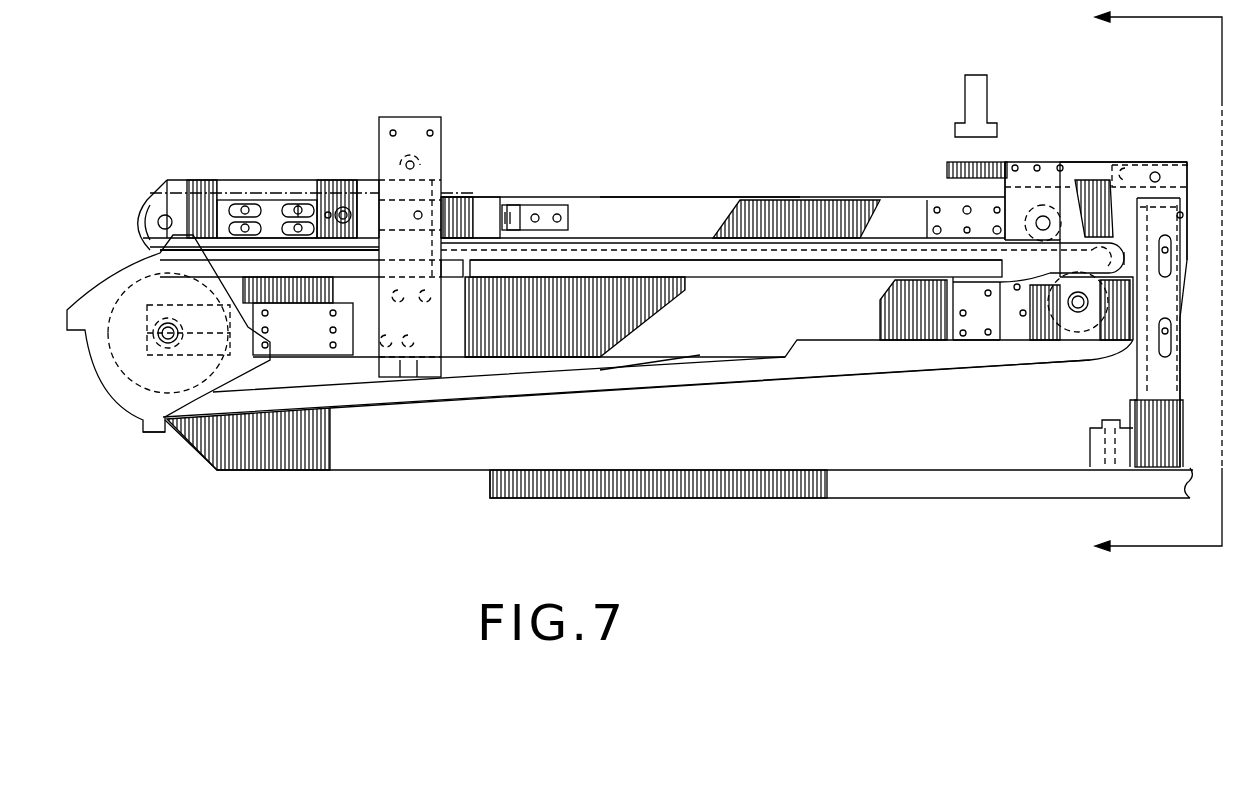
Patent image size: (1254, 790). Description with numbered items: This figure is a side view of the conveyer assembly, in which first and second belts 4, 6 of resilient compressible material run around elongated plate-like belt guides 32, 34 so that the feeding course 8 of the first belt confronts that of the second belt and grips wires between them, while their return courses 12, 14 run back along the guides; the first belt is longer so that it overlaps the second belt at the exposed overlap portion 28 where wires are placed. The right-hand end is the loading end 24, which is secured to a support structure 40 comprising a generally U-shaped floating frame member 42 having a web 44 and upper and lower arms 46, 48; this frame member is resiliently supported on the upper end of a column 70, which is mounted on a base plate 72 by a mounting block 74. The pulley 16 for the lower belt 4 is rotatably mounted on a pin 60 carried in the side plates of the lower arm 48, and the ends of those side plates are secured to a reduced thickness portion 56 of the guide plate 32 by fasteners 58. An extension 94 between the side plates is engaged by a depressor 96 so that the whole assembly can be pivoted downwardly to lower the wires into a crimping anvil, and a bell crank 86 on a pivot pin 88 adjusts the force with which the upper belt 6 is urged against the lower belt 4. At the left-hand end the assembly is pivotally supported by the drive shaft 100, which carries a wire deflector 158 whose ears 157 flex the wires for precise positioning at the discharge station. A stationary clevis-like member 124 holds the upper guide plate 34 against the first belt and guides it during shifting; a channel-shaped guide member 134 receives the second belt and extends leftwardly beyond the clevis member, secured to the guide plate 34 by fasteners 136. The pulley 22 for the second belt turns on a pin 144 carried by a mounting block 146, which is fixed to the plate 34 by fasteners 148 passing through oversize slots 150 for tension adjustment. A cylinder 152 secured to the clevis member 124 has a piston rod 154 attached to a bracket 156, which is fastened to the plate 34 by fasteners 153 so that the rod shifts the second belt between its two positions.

The first belt 4 is at (738, 388).
The second belt 6 is at (765, 190).
The feeding course 8 is at (1145, 281).
The return course 12 is at (838, 374).
The return course 14 is at (712, 195).
The pulley 16 is at (1113, 323).
The pulley 22 is at (143, 222).
The loading end 24 is at (1133, 259).
The overlap portion 28 is at (1063, 240).
The first belt guide 32 is at (738, 322).
The second belt guide 34 is at (670, 230).
The support structure 40 is at (1068, 138).
The floating frame member 42 is at (1142, 155).
The web 44 is at (1172, 250).
The upper arm 46 is at (1050, 177).
The lower arm 48 is at (1010, 330).
The reduced thickness portion 56 is at (950, 280).
The fasteners 58 is at (963, 338).
The pin 60 is at (1077, 312).
The column 70 is at (1182, 373).
The base plate 72 is at (842, 483).
The mounting block 74 is at (1100, 448).
The bell crank 86 is at (1193, 183).
The pivot pin 88 is at (1158, 172).
The extension 94 is at (947, 173).
The depressor 96 is at (968, 103).
The drive shaft 100 is at (163, 343).
The clevis-like member 124 is at (408, 118).
The channel-shaped guide member 134 is at (368, 183).
The fasteners 136 is at (341, 205).
The pin 144 is at (148, 212).
The mounting block 146 is at (177, 195).
The fasteners 148 is at (243, 206).
The oversize slots 150 is at (260, 208).
The cylinder 152 is at (468, 205).
The fasteners 153 is at (562, 216).
The piston rod 154 is at (506, 203).
The bracket 156 is at (540, 207).
The ears 157 is at (150, 430).
The wire deflector 158 is at (122, 368).